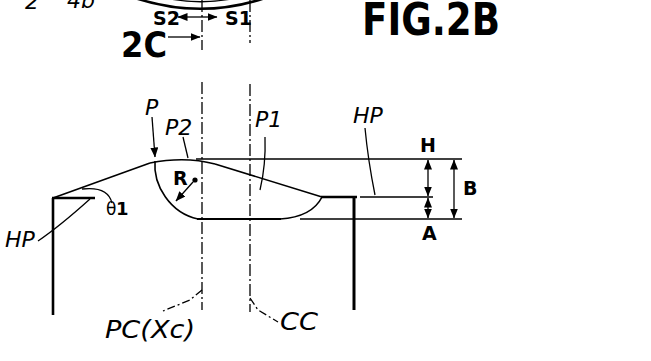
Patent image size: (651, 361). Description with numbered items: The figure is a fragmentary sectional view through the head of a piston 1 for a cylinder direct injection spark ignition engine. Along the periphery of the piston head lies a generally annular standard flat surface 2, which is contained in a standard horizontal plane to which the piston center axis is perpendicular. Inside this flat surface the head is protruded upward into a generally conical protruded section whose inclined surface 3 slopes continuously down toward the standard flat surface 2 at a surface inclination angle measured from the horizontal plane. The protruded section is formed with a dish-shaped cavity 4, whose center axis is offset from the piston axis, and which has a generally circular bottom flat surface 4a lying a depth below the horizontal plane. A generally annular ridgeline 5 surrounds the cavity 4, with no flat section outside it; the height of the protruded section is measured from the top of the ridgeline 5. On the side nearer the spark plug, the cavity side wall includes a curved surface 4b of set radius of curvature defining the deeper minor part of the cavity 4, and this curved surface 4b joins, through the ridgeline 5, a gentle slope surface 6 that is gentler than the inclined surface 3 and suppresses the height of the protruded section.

The piston 1 is at (359, 279).
The standard flat surface 2 is at (53, 197).
The inclined surface 3 is at (72, 186).
The cavity 4 is at (190, 213).
The bottom flat surface 4a is at (273, 218).
The curved surface 4b is at (163, 191).
The ridgeline 5 is at (278, 0).
The gentle slope surface 6 is at (127, 171).